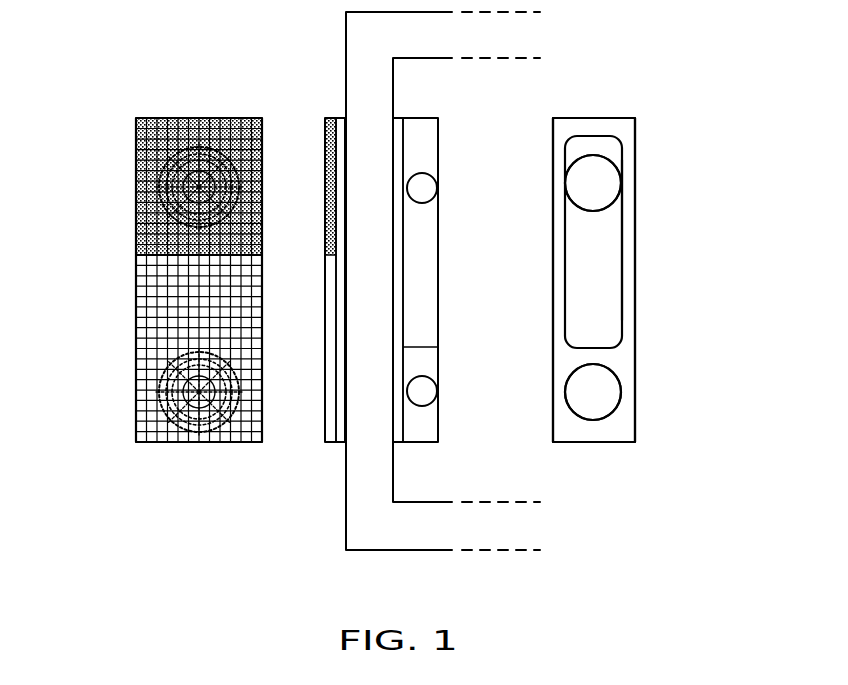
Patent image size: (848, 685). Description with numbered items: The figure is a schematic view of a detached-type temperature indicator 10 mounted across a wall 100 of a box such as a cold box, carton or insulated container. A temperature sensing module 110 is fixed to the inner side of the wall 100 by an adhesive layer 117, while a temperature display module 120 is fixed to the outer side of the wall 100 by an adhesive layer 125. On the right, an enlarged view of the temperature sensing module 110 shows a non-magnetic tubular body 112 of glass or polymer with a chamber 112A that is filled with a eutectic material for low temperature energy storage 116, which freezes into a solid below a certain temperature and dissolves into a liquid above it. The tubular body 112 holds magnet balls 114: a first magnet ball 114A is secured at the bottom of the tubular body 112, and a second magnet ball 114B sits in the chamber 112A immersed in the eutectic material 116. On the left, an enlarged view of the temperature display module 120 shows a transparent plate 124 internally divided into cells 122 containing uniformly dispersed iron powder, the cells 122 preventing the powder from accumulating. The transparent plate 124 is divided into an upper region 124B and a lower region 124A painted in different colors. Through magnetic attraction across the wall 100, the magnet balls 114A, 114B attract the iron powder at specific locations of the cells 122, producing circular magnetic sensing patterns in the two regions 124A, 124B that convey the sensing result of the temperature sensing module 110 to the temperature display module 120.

The detached-type temperature indicator 10 is at (330, 33).
The wall 100 is at (372, 538).
The temperature sensing module 110 is at (422, 118).
The tubular body 112 is at (558, 255).
The chamber 112A is at (610, 330).
The magnet balls 114 is at (755, 178).
The first magnet ball 114A is at (613, 392).
The second magnet ball 114B is at (613, 183).
The eutectic material for low temperature energy storage 116 is at (615, 250).
The adhesive layer of the temperature sensing module 117 is at (398, 446).
The temperature display module 120 is at (199, 91).
The cells 122 is at (263, 203).
The transparent plate 124 is at (153, 118).
The lower region 124A is at (131, 256).
The upper region 124B is at (131, 118).
The adhesive layer of the temperature display module 125 is at (342, 446).